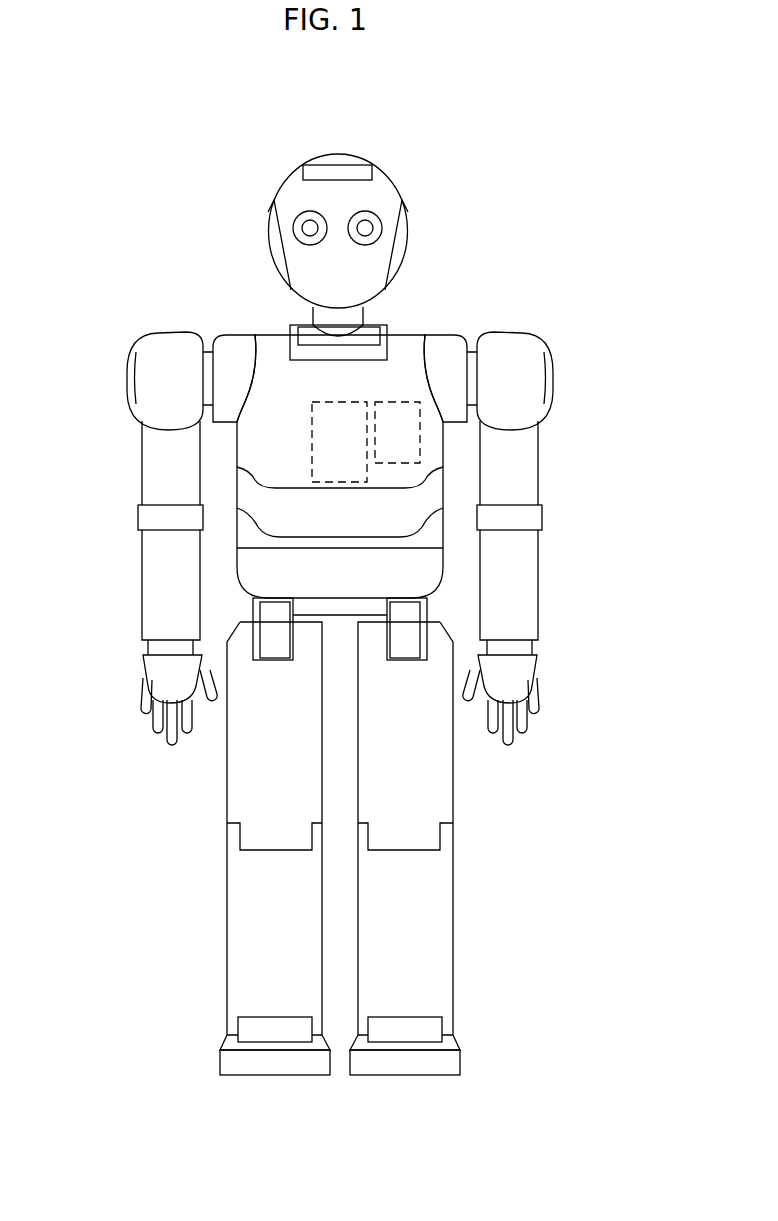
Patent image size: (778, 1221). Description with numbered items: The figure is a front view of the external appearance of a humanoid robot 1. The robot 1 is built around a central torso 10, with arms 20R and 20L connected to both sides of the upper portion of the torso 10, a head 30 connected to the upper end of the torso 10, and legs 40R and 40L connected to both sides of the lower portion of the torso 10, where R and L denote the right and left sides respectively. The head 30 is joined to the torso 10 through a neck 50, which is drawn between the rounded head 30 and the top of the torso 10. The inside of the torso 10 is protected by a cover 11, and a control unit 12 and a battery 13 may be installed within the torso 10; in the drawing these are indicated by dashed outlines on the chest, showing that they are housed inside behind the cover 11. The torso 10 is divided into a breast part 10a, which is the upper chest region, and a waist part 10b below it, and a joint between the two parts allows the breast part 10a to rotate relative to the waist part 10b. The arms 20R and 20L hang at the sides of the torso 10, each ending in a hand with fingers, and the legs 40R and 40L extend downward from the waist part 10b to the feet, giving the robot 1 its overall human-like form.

The humanoid robot 1 is at (527, 172).
The torso 10 is at (612, 485).
The breast part 10a is at (446, 487).
The waist part 10b is at (446, 562).
The cover 11 is at (442, 443).
The control unit 12 is at (312, 437).
The battery 13 is at (420, 417).
The right arm 20R is at (120, 507).
The left arm 20L is at (560, 584).
The head 30 is at (387, 165).
The right leg 40R is at (183, 811).
The left leg 40L is at (497, 811).
The neck 50 is at (372, 313).